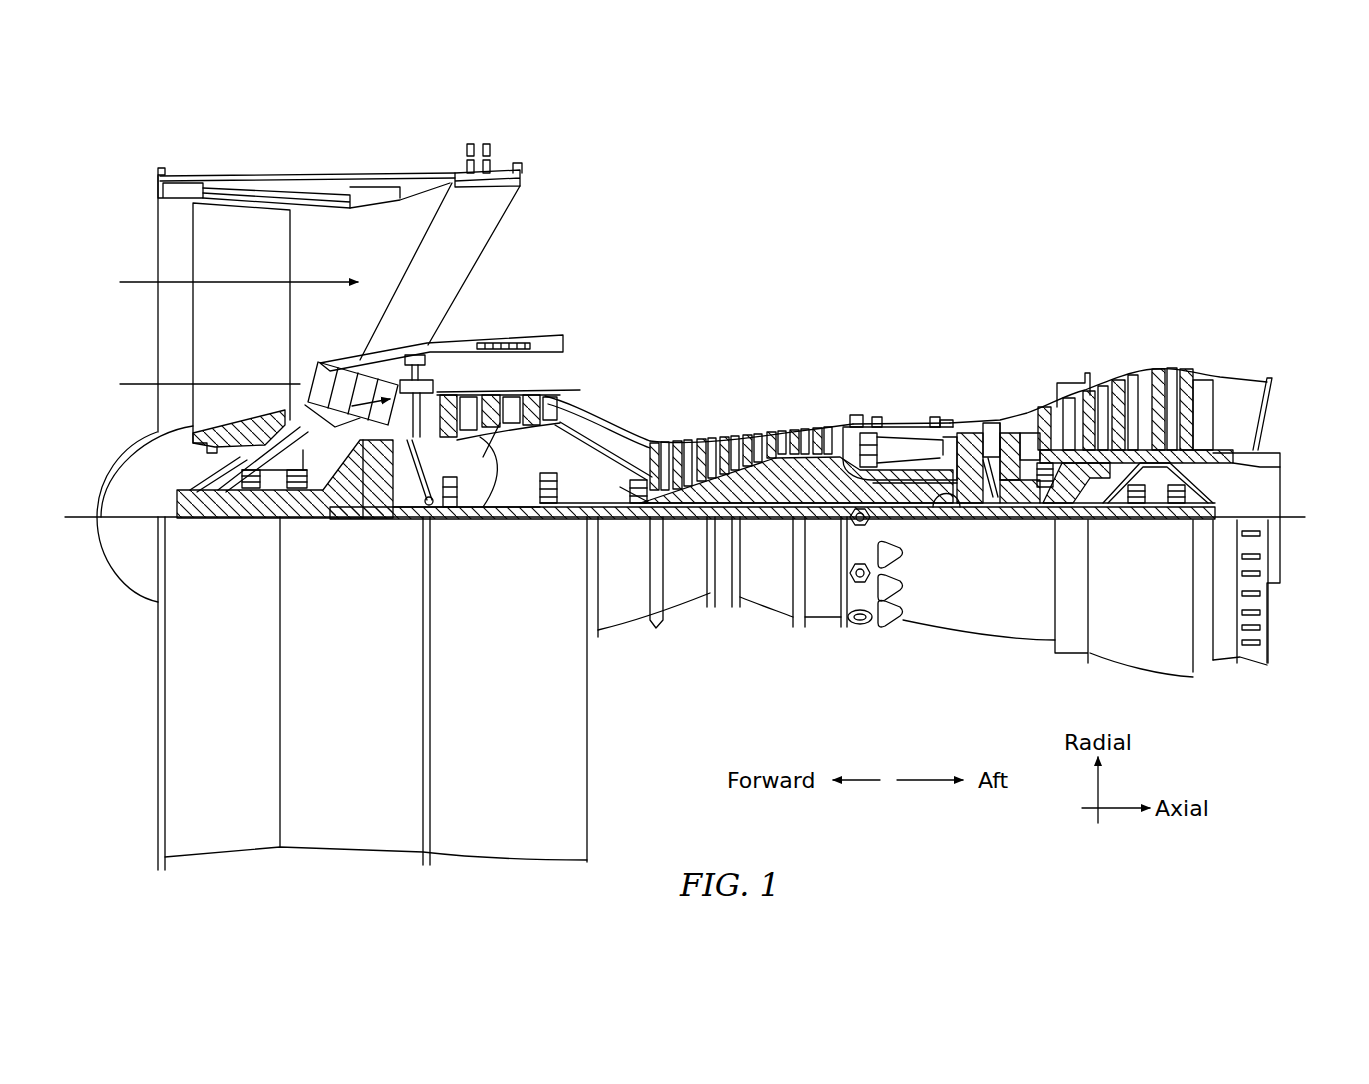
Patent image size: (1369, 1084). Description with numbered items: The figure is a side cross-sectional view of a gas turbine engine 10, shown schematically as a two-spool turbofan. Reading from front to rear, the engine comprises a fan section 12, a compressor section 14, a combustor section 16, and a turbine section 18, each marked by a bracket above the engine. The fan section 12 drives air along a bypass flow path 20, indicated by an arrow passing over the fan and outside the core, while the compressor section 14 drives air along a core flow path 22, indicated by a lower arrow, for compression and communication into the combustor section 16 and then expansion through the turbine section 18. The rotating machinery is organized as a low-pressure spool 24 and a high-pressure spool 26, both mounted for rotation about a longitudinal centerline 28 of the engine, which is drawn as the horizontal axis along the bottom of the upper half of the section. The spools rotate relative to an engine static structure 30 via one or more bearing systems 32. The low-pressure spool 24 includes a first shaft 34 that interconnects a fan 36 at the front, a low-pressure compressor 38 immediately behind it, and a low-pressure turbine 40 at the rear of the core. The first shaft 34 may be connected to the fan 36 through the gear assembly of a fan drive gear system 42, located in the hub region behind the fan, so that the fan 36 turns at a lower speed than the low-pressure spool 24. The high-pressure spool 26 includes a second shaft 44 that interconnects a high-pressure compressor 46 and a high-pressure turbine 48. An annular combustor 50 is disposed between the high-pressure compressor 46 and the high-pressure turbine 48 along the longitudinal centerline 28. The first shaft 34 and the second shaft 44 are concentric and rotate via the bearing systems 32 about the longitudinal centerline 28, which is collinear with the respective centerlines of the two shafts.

The gas turbine engine 10 is at (1130, 232).
The fan section 12 is at (152, 158).
The compressor section 14 is at (430, 299).
The combustor section 16 is at (850, 299).
The turbine section 18 is at (1205, 299).
The bypass flow path 20 is at (132, 282).
The core flow path 22 is at (132, 384).
The low-pressure spool 24 is at (773, 524).
The high-pressure spool 26 is at (733, 500).
The longitudinal centerline 28 is at (1303, 517).
The engine static structure 30 is at (823, 627).
The bearing systems 32 is at (1040, 505).
The first shaft 34 is at (600, 520).
The fan 36 is at (234, 341).
The low-pressure compressor 38 is at (507, 408).
The low-pressure turbine 40 is at (1133, 377).
The fan drive gear system 42 is at (378, 532).
The second shaft 44 is at (962, 506).
The high-pressure compressor 46 is at (735, 440).
The high-pressure turbine 48 is at (987, 423).
The annular combustor 50 is at (907, 457).